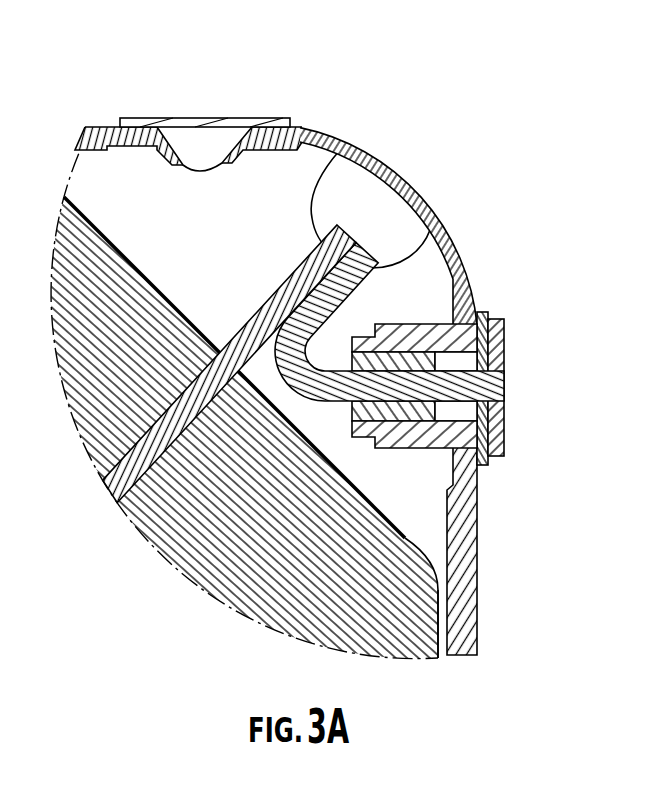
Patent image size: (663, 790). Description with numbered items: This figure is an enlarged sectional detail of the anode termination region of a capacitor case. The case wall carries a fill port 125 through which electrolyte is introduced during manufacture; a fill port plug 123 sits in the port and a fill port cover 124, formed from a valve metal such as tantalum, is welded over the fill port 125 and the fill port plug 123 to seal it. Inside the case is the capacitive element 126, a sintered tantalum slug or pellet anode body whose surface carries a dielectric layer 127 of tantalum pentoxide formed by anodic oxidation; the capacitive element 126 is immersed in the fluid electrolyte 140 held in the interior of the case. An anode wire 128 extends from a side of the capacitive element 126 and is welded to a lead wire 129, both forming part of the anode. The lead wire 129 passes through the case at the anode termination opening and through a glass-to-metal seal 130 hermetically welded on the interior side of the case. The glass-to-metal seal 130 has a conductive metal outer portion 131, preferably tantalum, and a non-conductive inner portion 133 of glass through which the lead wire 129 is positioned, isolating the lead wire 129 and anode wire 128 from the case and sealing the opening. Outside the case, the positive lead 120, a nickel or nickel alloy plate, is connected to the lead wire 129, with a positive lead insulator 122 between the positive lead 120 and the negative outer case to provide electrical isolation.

The positive lead 120 is at (551, 429).
The positive lead insulator 122 is at (495, 464).
The fill port plug 123 is at (201, 174).
The fill port cover 124 is at (176, 115).
The fill port 125 is at (248, 152).
The capacitive element 126 is at (418, 619).
The dielectric layer 127 is at (93, 228).
The anode wire 128 is at (341, 151).
The lead wire 129 is at (397, 270).
The glass-to-metal seal 130 is at (425, 323).
The conductive metal outer portion 131 is at (442, 334).
The non-conductive inner portion 133 is at (353, 413).
The fluid electrolyte 140 is at (432, 538).